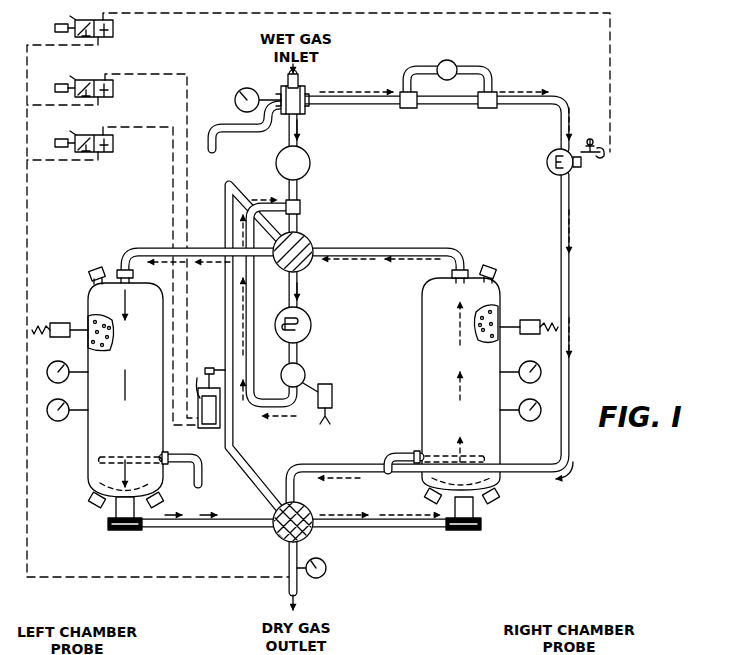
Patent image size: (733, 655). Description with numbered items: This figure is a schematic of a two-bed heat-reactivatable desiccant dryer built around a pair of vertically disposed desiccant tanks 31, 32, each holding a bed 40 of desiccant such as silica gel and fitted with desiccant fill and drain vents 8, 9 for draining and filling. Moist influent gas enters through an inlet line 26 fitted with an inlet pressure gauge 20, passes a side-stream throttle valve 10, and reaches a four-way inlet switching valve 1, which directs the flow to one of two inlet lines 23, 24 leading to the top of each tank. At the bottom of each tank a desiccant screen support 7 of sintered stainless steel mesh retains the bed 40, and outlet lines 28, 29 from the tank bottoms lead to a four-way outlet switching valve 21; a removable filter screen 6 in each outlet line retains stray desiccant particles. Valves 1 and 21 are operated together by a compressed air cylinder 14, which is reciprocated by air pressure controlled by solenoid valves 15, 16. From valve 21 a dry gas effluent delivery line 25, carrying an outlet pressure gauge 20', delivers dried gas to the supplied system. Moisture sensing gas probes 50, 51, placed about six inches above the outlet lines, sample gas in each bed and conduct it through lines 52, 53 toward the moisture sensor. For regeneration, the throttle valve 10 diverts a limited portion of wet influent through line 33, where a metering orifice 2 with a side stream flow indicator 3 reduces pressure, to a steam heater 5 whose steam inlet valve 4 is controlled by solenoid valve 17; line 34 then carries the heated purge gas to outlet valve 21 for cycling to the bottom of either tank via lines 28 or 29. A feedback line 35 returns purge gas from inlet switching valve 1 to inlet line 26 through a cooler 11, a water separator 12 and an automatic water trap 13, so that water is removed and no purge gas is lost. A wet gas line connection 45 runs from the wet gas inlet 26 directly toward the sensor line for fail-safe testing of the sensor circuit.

The four-way inlet switching valve 1 is at (308, 242).
The metering orifice 2 is at (447, 110).
The side stream flow indicator 3 is at (455, 65).
The steam inlet valve 4 is at (606, 155).
The steam heater 5 is at (547, 164).
The filter screen 6 is at (108, 525).
The desiccant screen support 7 is at (98, 480).
The desiccant fill and drain vent 8 is at (92, 502).
The desiccant fill and drain vent 9 is at (92, 273).
The side-stream throttle valve 10 is at (315, 167).
The cooler 11 is at (311, 320).
The water separator 12 is at (305, 368).
The automatic water trap 13 is at (333, 390).
The compressed air cylinder 14 is at (203, 376).
The solenoid valve 15 is at (113, 90).
The solenoid valve 16 is at (113, 145).
The solenoid valve 17 is at (113, 30).
The inlet pressure gauge 20 is at (246, 89).
The outlet pressure gauge 20' is at (333, 575).
The four-way outlet switching valve 21 is at (275, 535).
The inlet line 23 is at (152, 246).
The inlet line 24 is at (425, 246).
The dry gas effluent delivery line 25 is at (305, 538).
The inlet line 26 is at (300, 85).
The outlet line 28 is at (193, 532).
The outlet line 29 is at (435, 532).
The desiccant tank 31 is at (113, 436).
The desiccant tank 32 is at (450, 426).
The line 33 is at (548, 103).
The line 34 is at (569, 292).
The feedback line 35 is at (250, 372).
The desiccant bed 40 is at (90, 318).
The wet gas line connection 45 is at (237, 135).
The moisture sensing gas probe 50 is at (145, 458).
The moisture sensing gas probe 51 is at (432, 450).
The line 52 is at (200, 480).
The line 53 is at (388, 460).